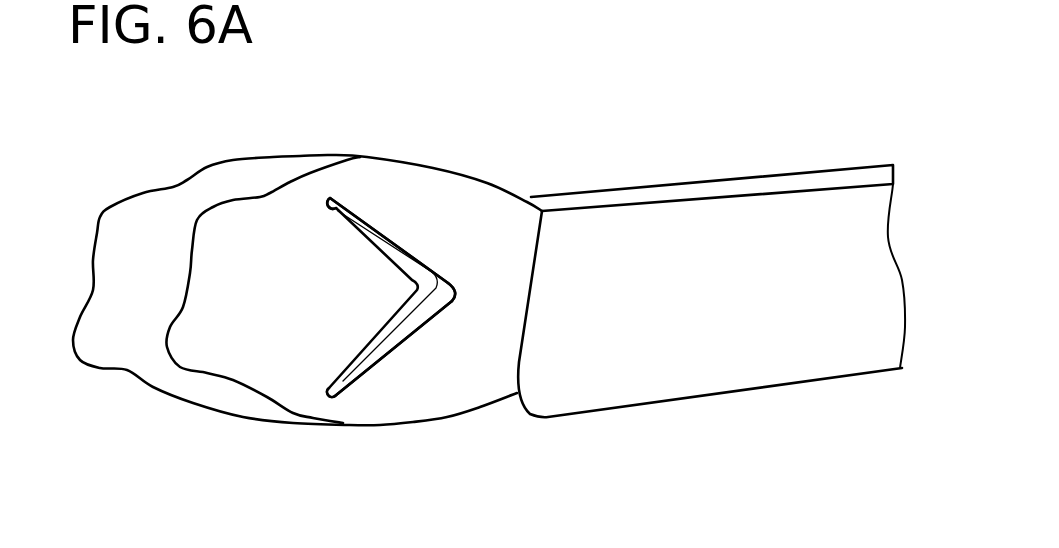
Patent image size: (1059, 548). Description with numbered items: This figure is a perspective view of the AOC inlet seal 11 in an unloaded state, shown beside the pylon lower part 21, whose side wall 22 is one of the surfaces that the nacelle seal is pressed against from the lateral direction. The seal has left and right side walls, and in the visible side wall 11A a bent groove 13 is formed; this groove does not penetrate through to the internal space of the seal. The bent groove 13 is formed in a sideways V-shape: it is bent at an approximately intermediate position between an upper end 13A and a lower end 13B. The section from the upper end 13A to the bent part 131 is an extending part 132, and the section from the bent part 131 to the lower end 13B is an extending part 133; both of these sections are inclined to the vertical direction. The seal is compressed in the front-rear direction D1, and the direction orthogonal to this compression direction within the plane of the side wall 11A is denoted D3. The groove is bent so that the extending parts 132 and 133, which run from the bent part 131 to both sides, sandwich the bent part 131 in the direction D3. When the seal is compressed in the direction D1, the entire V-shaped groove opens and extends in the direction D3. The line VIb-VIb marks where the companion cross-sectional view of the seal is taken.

The AOC inlet seal 11 is at (273, 156).
The side wall 11A is at (450, 190).
The bent groove 13 is at (385, 252).
The upper end 13A is at (327, 200).
The lower end 13B is at (328, 396).
The bent part 131 is at (460, 290).
The extending part 132 is at (414, 249).
The extending part 133 is at (400, 344).
The pylon lower part 21 is at (663, 184).
The side wall 22 is at (764, 371).
The front-rear direction D1 is at (566, 467).
The direction D3 is at (293, 291).
The line VIb- VIb is at (173, 278).